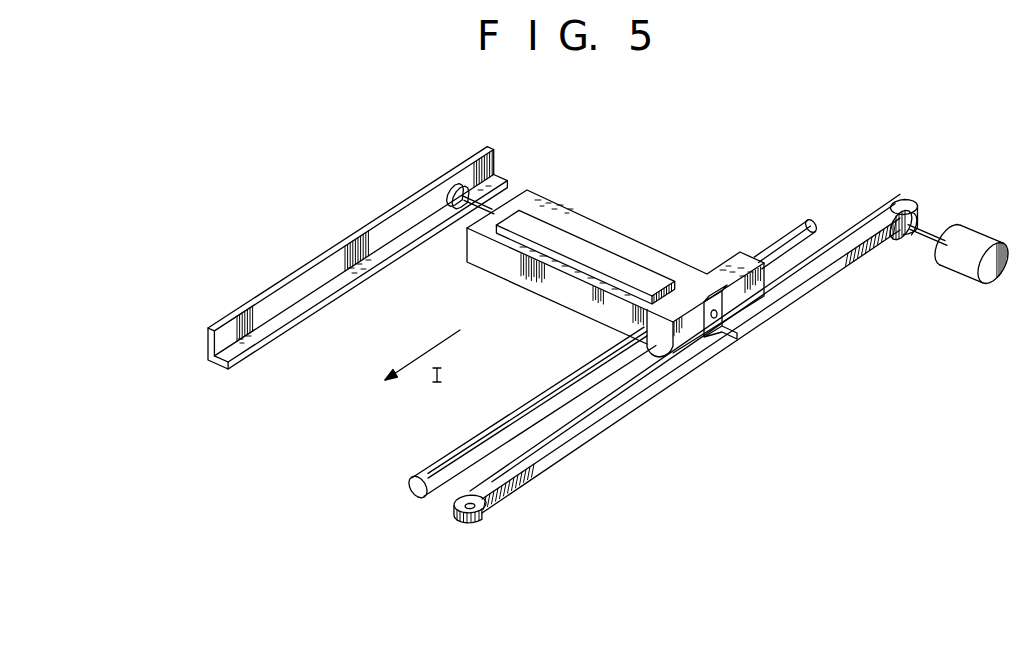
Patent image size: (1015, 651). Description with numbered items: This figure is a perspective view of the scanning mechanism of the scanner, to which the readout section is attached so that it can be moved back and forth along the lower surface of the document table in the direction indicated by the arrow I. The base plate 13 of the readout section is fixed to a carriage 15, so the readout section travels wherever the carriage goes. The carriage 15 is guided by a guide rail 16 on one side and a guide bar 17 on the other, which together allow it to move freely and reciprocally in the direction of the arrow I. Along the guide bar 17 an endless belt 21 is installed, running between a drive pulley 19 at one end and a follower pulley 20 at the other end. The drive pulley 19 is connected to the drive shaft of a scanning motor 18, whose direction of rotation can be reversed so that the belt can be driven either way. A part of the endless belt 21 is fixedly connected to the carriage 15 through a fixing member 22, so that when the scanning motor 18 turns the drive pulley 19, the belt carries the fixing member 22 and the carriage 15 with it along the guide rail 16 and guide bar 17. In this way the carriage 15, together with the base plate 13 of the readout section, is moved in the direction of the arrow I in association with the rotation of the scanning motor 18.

The base plate 13 is at (570, 233).
The carriage 15 is at (636, 251).
The guide rail 16 is at (380, 216).
The guide bar 17 is at (776, 241).
The scanning motor 18 is at (957, 272).
The drive pulley 19 is at (910, 212).
The follower pulley 20 is at (473, 520).
The endless belt 21 is at (627, 416).
The fixing member 22 is at (736, 328).